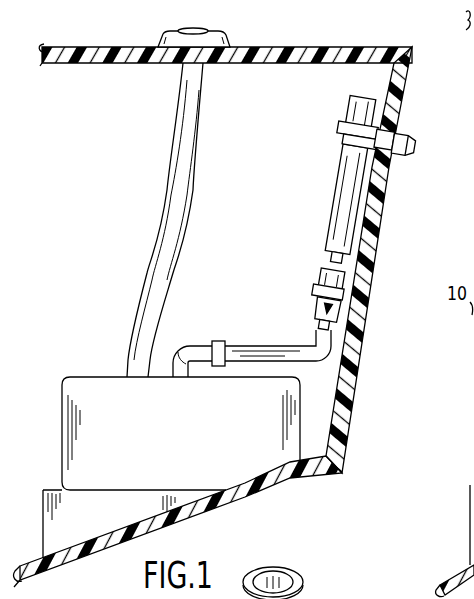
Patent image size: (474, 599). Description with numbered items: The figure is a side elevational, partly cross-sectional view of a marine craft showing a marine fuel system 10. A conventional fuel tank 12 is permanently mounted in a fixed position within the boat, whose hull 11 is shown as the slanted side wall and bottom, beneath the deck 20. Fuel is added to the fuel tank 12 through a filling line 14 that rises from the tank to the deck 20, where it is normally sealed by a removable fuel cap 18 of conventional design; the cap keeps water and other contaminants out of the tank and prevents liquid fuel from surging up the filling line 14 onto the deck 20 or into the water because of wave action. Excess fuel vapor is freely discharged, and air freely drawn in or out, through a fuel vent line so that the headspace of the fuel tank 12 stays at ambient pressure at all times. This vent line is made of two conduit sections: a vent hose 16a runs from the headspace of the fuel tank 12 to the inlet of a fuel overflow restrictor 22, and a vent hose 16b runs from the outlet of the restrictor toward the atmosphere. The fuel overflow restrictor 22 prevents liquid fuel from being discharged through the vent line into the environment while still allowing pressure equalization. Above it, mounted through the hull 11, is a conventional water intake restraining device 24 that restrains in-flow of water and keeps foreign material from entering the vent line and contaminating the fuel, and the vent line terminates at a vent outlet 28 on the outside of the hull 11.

The marine fuel system 10 is at (95, 352).
The hull 11 is at (342, 452).
The fuel tank 12 is at (258, 455).
The filling line 14 is at (153, 273).
The vent hose/conduit means 16a is at (313, 336).
The vent hose/conduit means 16b is at (341, 196).
The fuel cap 18 is at (199, 33).
The deck 20 is at (328, 50).
The fuel overflow restrictor 22 is at (313, 293).
The water intake restraining device 24 is at (372, 109).
The vent outlet 28 is at (413, 146).